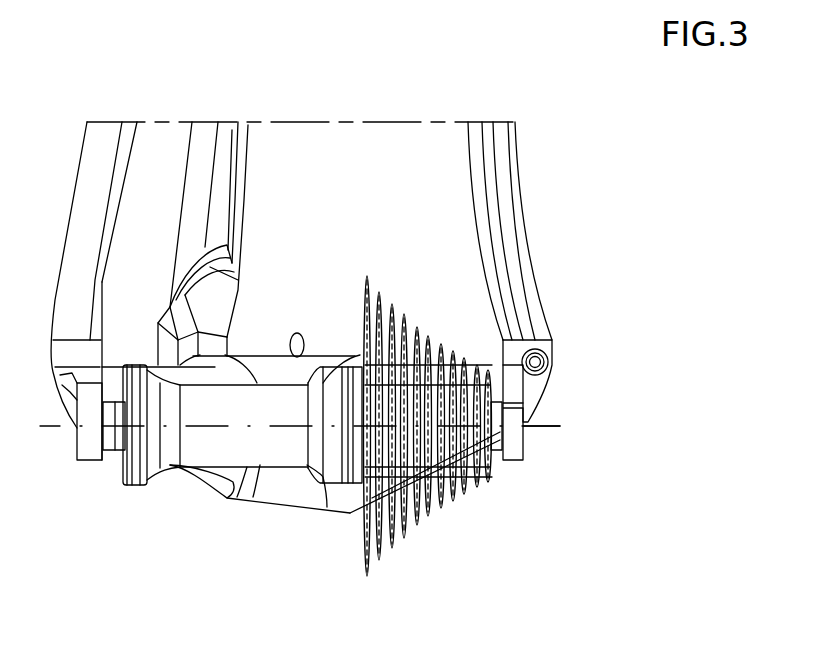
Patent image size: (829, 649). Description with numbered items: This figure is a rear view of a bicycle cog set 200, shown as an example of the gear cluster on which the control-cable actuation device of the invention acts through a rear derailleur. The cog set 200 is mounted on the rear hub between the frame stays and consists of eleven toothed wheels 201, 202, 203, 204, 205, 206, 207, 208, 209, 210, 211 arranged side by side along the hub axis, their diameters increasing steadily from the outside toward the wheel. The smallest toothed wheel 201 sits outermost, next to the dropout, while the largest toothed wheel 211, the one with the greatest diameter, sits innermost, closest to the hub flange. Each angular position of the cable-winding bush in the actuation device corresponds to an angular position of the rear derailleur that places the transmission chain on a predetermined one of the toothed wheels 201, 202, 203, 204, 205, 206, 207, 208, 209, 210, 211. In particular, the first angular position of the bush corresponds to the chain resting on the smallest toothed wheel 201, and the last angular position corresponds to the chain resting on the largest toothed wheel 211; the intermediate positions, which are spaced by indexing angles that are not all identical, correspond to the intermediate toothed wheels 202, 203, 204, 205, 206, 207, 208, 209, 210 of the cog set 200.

The cog set 200 is at (531, 494).
The smallest toothed wheel 201 is at (489, 481).
The toothed wheel 202 is at (473, 490).
The toothed wheel 203 is at (465, 353).
The toothed wheel 204 is at (452, 343).
The toothed wheel 205 is at (441, 510).
The toothed wheel 206 is at (434, 334).
The toothed wheel 207 is at (404, 313).
The toothed wheel 208 is at (404, 541).
The toothed wheel 209 is at (392, 303).
The toothed wheel 210 is at (366, 275).
The largest toothed wheel 211 is at (362, 549).